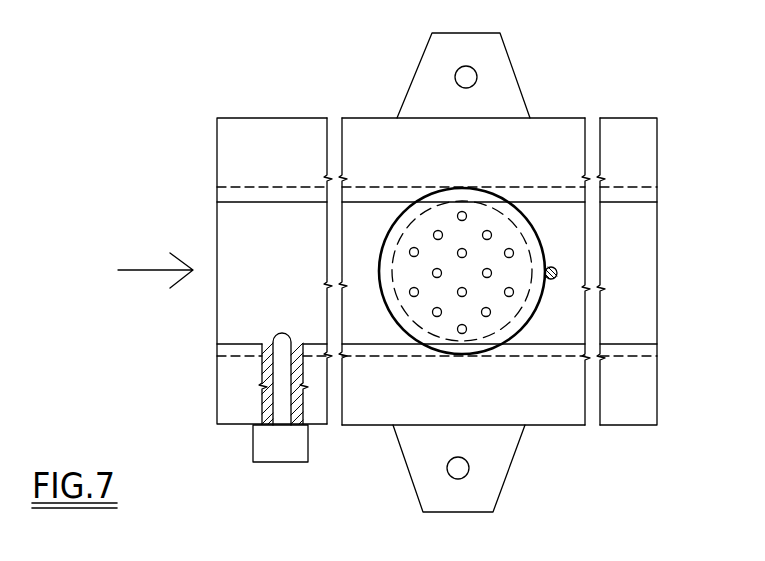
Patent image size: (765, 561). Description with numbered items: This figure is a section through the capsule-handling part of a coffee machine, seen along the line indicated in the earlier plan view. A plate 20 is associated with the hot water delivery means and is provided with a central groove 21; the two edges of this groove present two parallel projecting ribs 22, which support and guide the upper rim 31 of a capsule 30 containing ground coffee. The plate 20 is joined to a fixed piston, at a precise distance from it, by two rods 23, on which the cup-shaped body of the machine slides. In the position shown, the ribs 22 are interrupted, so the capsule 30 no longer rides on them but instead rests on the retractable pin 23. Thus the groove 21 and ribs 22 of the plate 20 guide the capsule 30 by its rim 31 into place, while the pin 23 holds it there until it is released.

The plate 20 is at (249, 123).
The central groove 21 is at (250, 237).
The projecting ribs 22 is at (238, 343).
The rods 23 is at (453, 77).
The capsule 30 is at (503, 232).
The upper rim 31 is at (422, 188).